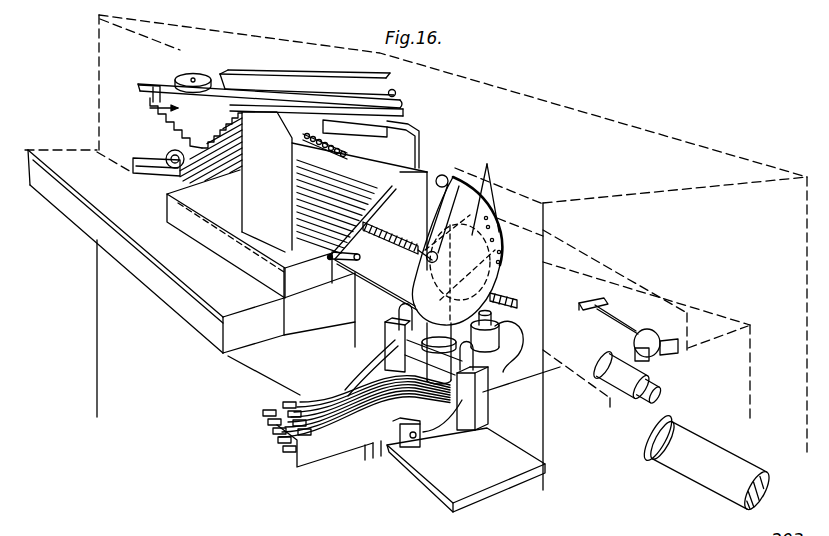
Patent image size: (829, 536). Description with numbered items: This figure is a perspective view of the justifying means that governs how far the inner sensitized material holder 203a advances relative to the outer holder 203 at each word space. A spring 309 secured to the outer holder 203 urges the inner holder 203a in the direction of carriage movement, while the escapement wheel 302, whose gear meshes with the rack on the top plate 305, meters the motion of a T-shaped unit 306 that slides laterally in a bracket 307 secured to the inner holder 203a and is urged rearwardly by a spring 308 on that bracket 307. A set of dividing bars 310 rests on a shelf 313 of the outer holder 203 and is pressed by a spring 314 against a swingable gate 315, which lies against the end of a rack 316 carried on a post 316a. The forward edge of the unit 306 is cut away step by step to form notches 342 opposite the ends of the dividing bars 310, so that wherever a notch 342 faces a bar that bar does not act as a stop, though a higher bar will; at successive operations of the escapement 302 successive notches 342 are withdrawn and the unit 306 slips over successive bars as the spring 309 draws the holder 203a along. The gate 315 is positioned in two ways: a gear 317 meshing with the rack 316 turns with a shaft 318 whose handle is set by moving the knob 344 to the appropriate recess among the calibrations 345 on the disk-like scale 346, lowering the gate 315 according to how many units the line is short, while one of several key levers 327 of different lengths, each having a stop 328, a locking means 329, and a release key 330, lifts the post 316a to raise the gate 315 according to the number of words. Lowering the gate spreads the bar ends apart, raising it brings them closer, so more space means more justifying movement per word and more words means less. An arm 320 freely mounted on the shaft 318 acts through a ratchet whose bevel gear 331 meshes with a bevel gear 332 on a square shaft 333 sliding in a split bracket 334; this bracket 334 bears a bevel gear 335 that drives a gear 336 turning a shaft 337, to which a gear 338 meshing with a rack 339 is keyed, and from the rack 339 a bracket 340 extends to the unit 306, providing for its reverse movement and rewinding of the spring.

The outer sensitized material holder 203 is at (692, 261).
The inner sensitized material holder 203a is at (723, 311).
The escapement wheel 302 is at (305, 76).
The top plate 305 is at (152, 84).
The T-shaped unit 306 is at (148, 105).
The bracket 307 is at (147, 86).
The spring 308 is at (197, 74).
The spring 309 is at (628, 333).
The dividing bars 310 is at (220, 165).
The shelf 313 is at (222, 217).
The spring 314 is at (338, 141).
The swingable gate 315 is at (378, 208).
The rack 316 is at (359, 257).
The post 316a is at (430, 328).
The gear 317 is at (422, 247).
The shaft 318 is at (422, 263).
The arm 320 is at (492, 181).
The key levers 327 is at (294, 405).
The stop 328 is at (379, 462).
The locking means 329 is at (350, 468).
The release key 330 is at (276, 438).
The bevel gear 331 is at (500, 227).
The bevel gear 332 is at (503, 258).
The square shaft 333 is at (515, 288).
The split bracket 334 is at (518, 327).
The bevel gear 335 is at (520, 348).
The gear 336 is at (530, 380).
The shaft 337 is at (386, 288).
The gear 338 is at (166, 153).
The rack 339 is at (158, 178).
The bracket 340 is at (419, 129).
The notches 342 is at (162, 118).
The knob 344 is at (452, 176).
The calibrations 345 is at (500, 232).
The disk-like scale 346 is at (435, 174).